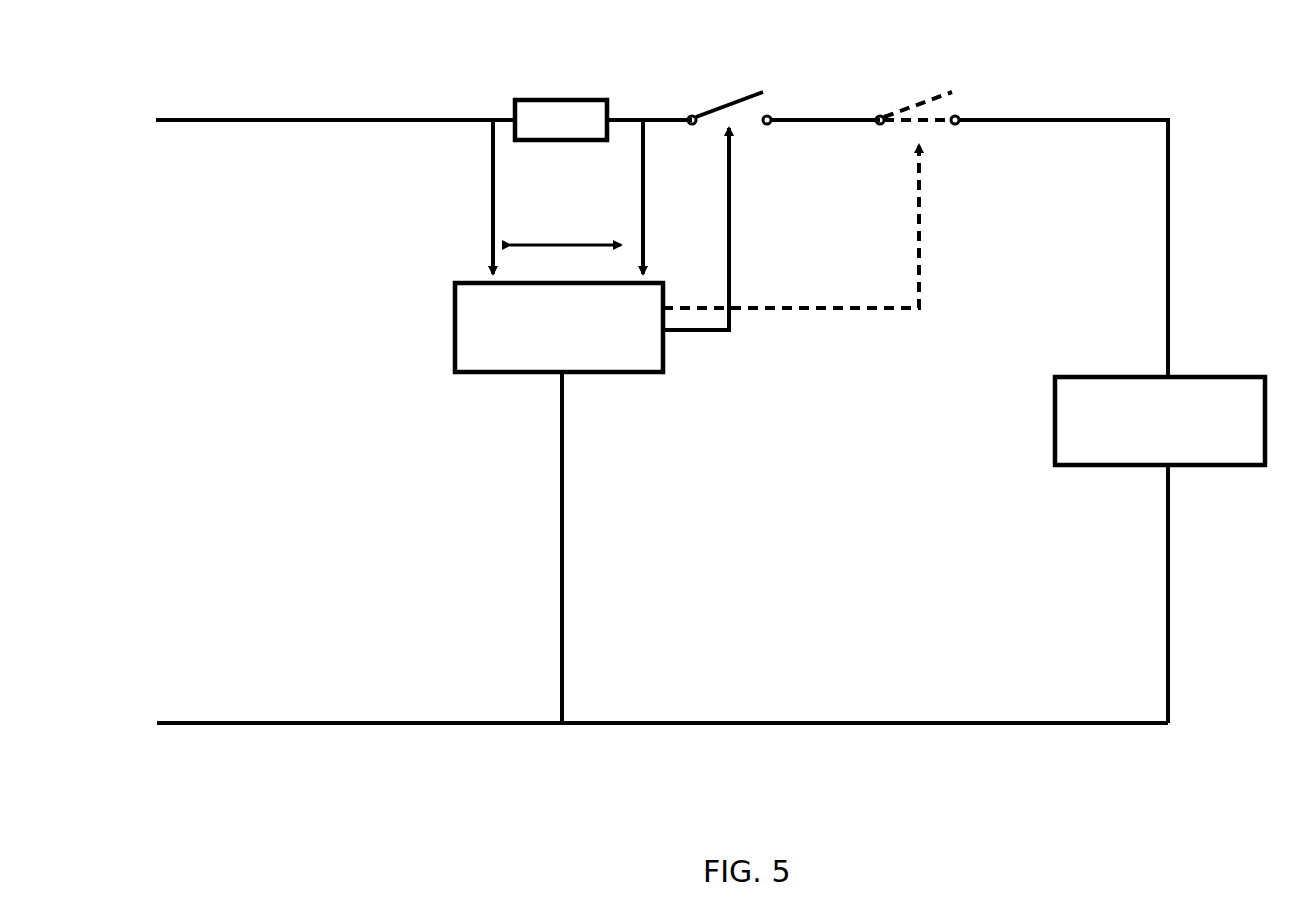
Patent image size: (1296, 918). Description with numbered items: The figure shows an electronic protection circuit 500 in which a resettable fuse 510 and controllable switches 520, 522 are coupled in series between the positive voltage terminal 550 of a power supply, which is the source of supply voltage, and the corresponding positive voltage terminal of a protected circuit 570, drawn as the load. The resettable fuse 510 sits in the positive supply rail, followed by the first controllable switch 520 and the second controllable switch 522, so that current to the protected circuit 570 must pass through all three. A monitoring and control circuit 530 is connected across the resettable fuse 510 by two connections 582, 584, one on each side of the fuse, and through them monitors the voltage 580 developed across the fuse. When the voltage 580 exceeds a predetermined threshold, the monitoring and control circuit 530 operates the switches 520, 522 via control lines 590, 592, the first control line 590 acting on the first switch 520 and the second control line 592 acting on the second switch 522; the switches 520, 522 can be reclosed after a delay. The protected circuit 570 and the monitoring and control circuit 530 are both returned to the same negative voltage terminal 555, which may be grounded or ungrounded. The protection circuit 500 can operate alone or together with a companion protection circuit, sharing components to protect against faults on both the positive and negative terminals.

The electronic protection circuit 500 is at (746, 382).
The resettable fuse 510 is at (560, 112).
The controllable switch 520 is at (710, 100).
The controllable switch 522 is at (898, 100).
The monitoring and control circuit 530 is at (501, 373).
The positive voltage terminal 550 is at (131, 104).
The negative voltage terminal 555 is at (138, 700).
The protected circuit 570 is at (1108, 375).
The voltage 580 is at (565, 232).
The connection 582 is at (486, 212).
The connection 584 is at (647, 212).
The control line 590 is at (731, 264).
The control line 592 is at (921, 264).